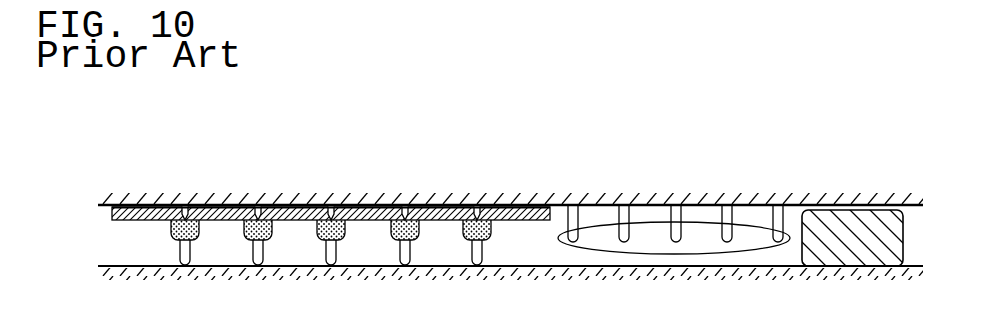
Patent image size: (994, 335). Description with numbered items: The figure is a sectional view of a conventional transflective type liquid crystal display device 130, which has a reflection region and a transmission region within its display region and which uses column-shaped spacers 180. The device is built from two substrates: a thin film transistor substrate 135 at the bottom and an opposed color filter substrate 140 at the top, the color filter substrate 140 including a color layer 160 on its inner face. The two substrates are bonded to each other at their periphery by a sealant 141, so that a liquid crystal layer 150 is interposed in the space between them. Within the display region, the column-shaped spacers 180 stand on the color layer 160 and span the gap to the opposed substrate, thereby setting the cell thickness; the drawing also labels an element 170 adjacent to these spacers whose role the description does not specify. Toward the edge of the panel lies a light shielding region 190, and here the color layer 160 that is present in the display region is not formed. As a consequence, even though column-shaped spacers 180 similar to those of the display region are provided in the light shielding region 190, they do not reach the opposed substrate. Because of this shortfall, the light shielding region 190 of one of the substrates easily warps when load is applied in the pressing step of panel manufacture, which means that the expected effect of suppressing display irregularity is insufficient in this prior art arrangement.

The transflective type liquid crystal display device 130 is at (514, 139).
The thin film transistor substrate 135 is at (290, 268).
The color filter substrate 140 is at (296, 206).
The sealant 141 is at (857, 252).
The liquid crystal layer 150 is at (122, 248).
The color layer 160 is at (112, 210).
The solder bumps 170 is at (166, 242).
The column-shaped spacers 180 is at (575, 217).
The light shielding region 190 is at (673, 248).